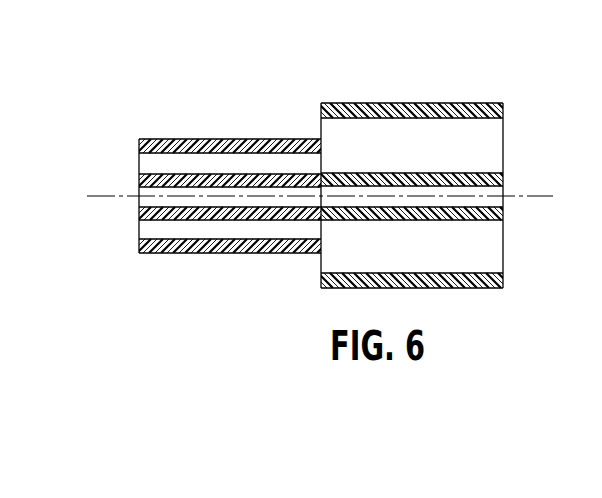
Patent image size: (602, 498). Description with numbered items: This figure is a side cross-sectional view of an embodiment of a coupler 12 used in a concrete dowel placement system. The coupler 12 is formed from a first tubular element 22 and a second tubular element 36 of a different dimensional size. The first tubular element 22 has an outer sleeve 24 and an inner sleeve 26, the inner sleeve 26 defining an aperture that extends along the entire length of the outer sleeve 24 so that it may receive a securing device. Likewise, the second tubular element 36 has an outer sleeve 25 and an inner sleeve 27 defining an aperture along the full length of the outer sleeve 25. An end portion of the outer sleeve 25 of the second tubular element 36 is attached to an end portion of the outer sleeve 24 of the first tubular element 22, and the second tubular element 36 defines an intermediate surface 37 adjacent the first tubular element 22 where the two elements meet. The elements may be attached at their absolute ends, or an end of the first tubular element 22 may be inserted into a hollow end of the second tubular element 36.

The coupler 12 is at (486, 48).
The first tubular element 22 is at (219, 264).
The outer sleeve 24 is at (150, 146).
The outer sleeve 25 is at (490, 108).
The inner sleeve 26 is at (139, 181).
The inner sleeve 27 is at (483, 180).
The second tubular element 36 is at (478, 296).
The intermediate surface 37 is at (320, 128).